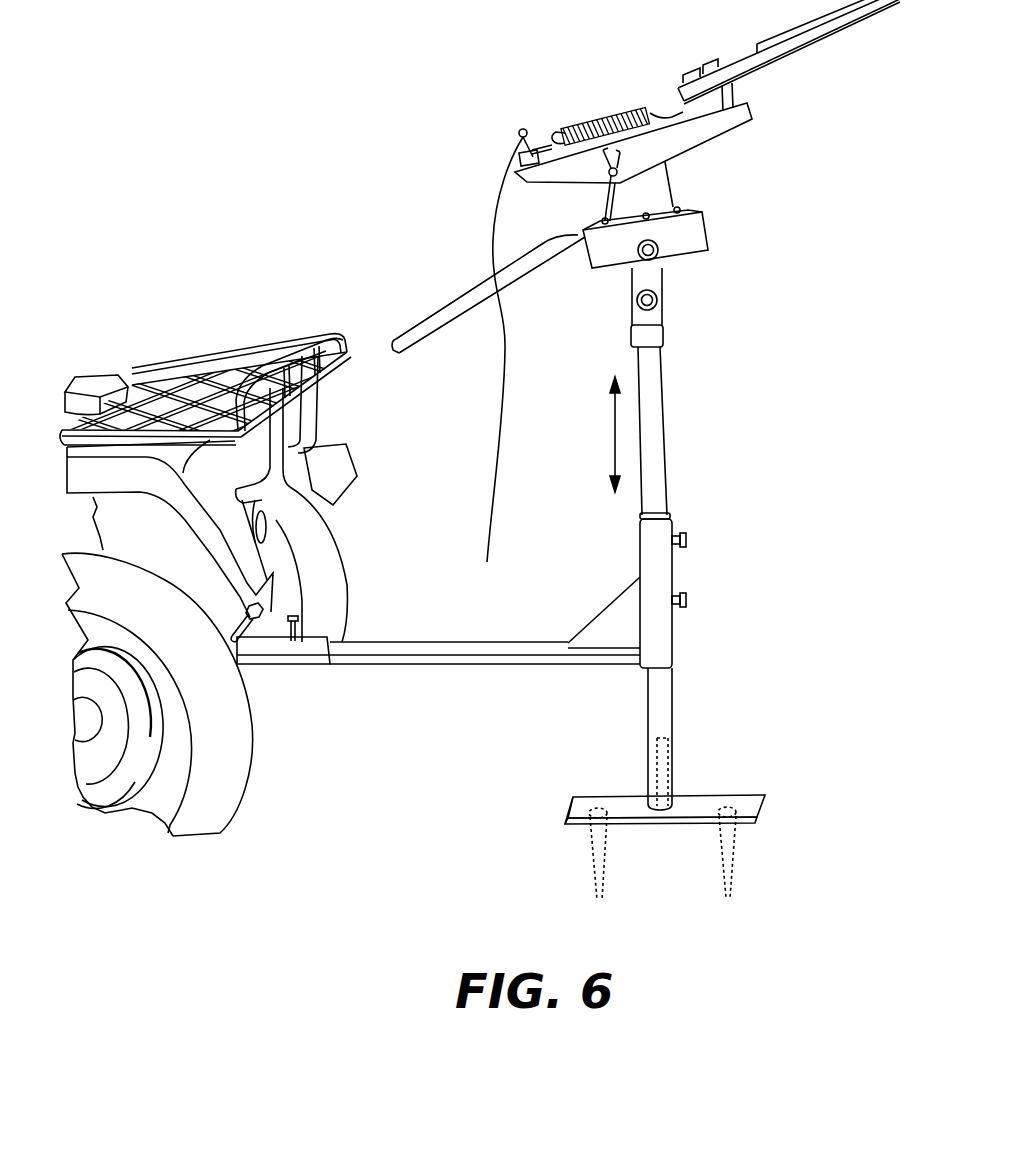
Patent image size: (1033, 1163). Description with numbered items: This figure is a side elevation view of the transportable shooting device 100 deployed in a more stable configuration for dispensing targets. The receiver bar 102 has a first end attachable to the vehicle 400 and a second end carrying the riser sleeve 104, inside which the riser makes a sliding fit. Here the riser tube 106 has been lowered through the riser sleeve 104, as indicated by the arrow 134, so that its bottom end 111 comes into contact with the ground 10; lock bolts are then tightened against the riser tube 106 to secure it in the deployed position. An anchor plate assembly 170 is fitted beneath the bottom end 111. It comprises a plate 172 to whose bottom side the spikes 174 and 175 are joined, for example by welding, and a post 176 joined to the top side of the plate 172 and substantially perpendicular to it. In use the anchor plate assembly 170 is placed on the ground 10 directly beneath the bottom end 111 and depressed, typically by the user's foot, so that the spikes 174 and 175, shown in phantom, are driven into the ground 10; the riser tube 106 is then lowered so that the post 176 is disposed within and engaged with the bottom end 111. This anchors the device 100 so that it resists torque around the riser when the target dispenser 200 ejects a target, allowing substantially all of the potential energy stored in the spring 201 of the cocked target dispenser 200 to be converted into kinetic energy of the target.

The ground 10 is at (537, 822).
The transportable shooting device 100 is at (722, 487).
The receiver bar 102 is at (418, 650).
The riser sleeve 104 is at (672, 573).
The riser tube 106 is at (663, 428).
The bottom end 111 is at (673, 720).
The arrow 134 is at (612, 428).
The anchor plate assembly 170 is at (790, 801).
The plate 172 is at (648, 827).
The spike 174 is at (593, 865).
The spike 175 is at (737, 862).
The post 176 is at (665, 773).
The target dispenser 200 is at (566, 85).
The spring 201 is at (612, 120).
The vehicle 400 is at (144, 332).